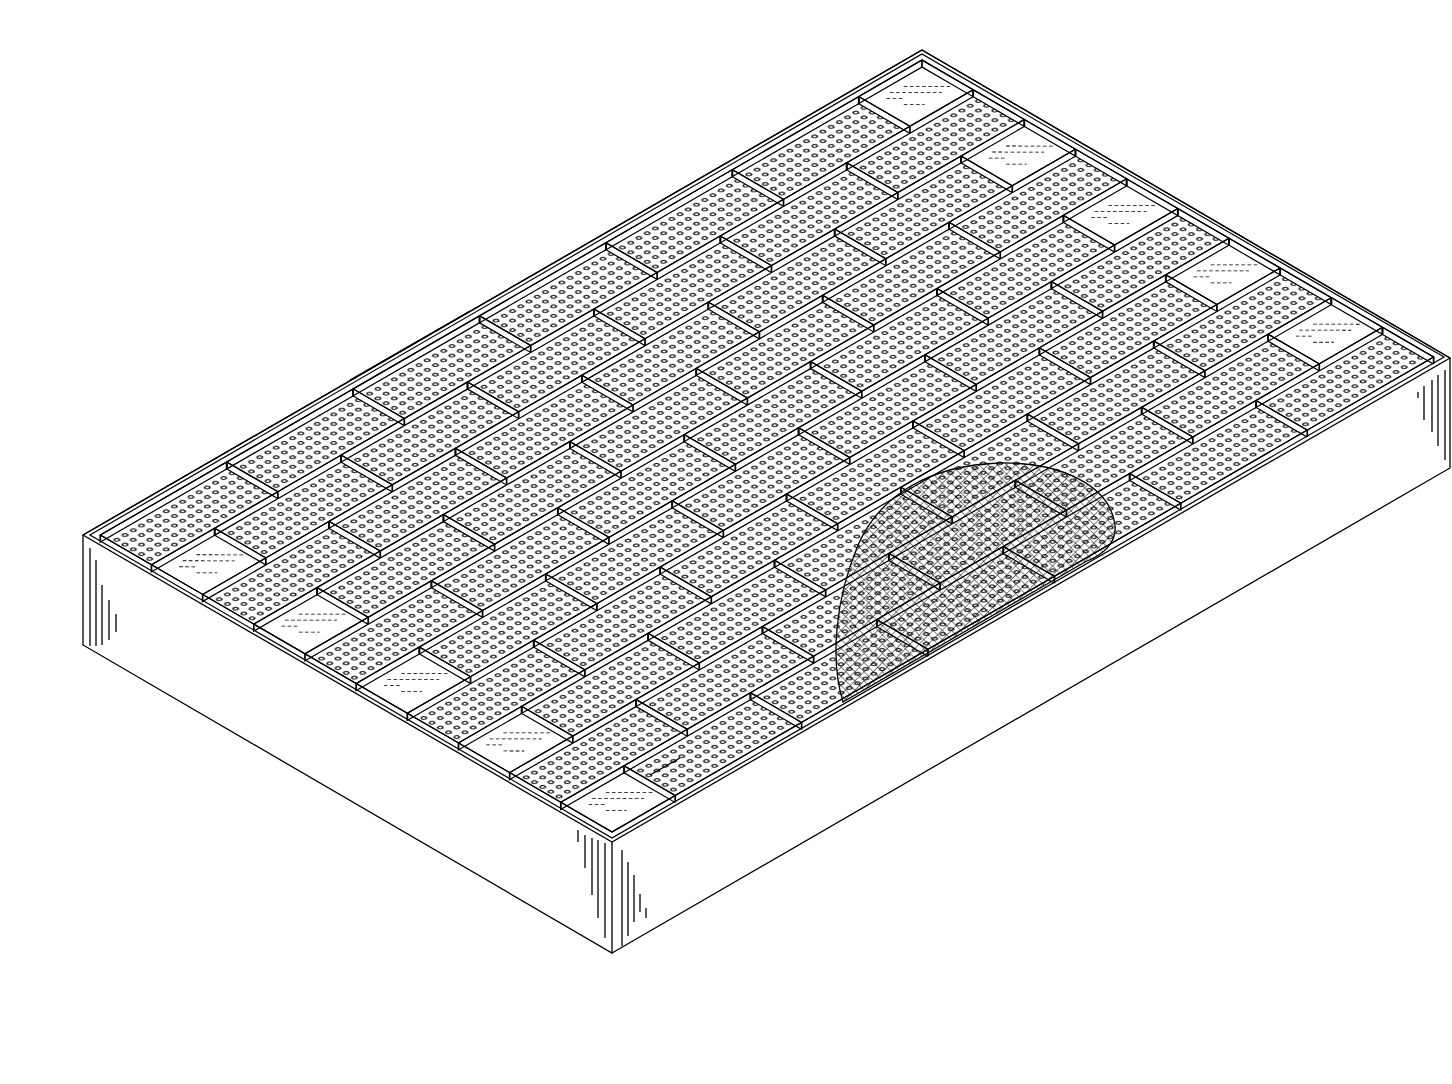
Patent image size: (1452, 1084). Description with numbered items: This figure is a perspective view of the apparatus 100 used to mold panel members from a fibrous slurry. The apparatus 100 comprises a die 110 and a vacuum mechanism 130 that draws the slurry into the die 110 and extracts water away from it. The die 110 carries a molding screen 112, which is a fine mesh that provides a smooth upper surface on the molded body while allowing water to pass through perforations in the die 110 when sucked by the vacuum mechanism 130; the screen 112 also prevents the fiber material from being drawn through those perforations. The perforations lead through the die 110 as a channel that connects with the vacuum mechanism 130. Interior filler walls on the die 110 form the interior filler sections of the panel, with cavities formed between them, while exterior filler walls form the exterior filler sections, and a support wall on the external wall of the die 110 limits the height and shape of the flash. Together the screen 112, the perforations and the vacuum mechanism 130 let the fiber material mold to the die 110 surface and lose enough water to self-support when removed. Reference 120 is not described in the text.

The apparatus for molding panel members 100 is at (1183, 162).
The die 110 is at (1066, 671).
The molding screen 112 is at (1100, 548).
The side wall 120 is at (1020, 737).
The vacuum mechanism 130 is at (357, 821).